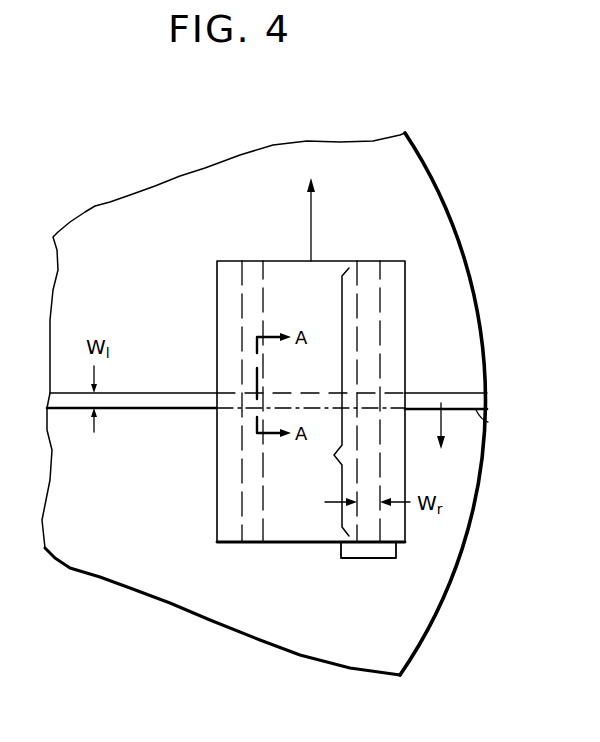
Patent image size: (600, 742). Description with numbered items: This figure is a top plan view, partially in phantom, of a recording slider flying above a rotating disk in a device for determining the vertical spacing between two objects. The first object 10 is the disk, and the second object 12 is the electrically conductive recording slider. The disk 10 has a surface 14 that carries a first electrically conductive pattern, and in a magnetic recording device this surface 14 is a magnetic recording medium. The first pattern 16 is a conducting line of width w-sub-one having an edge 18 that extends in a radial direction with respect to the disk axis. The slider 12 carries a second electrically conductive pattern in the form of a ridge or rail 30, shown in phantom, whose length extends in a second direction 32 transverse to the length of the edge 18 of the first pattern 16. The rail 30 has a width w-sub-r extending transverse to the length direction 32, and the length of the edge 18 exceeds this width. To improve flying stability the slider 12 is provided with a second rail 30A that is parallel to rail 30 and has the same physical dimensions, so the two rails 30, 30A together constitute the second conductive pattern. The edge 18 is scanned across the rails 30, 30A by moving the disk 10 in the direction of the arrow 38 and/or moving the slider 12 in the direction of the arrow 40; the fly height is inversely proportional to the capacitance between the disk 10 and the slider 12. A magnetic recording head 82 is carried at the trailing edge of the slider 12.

The first object 10 is at (458, 574).
The second object 12 is at (408, 288).
The surface 14 is at (379, 636).
The pattern 16 is at (459, 396).
The edge 18 is at (490, 425).
The second pattern 30 is at (367, 273).
The second ridge or rail 30A is at (253, 271).
The second direction 32 is at (323, 402).
The arrow 38 is at (440, 440).
The arrow 40 is at (311, 207).
The magnetic recording head 82 is at (362, 552).